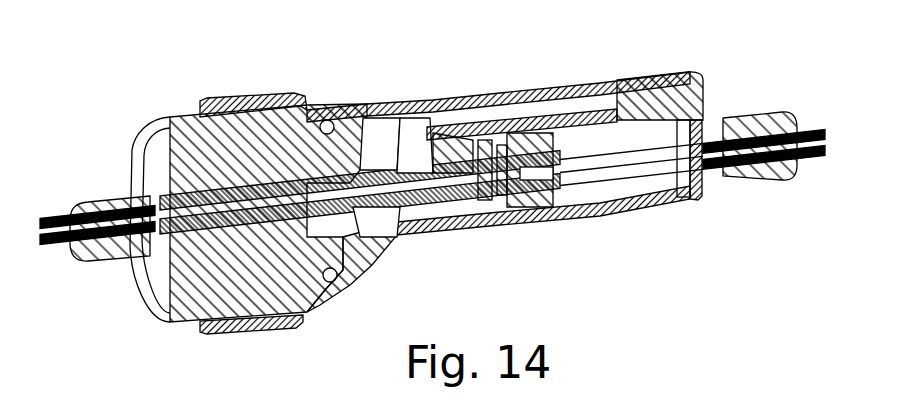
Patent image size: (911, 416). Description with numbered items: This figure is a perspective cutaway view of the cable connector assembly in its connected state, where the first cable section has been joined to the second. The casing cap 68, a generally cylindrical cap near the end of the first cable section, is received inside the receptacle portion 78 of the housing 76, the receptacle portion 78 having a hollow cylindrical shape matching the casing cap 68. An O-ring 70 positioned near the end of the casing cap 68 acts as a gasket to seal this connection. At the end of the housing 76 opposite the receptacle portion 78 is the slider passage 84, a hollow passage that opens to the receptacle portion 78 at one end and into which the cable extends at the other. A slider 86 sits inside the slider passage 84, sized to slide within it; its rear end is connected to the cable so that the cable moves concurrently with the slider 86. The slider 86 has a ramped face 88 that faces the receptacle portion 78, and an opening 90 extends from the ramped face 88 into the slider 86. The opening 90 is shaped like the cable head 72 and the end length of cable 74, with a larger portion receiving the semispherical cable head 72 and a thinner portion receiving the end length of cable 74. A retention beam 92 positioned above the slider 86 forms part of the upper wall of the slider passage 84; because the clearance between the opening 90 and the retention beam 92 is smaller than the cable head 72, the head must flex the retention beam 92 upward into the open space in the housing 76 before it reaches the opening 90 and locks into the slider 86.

The casing cap 68 is at (200, 305).
The O-ring 70 is at (332, 282).
The cable head 72 is at (457, 145).
The end length of cable 74 is at (430, 178).
The housing 76 is at (590, 213).
The receptacle portion 78 is at (255, 98).
The slider passage 84 is at (652, 187).
The slider 86 is at (510, 227).
The ramped face 88 is at (390, 247).
The opening 90 is at (477, 140).
The retention beam 92 is at (547, 120).